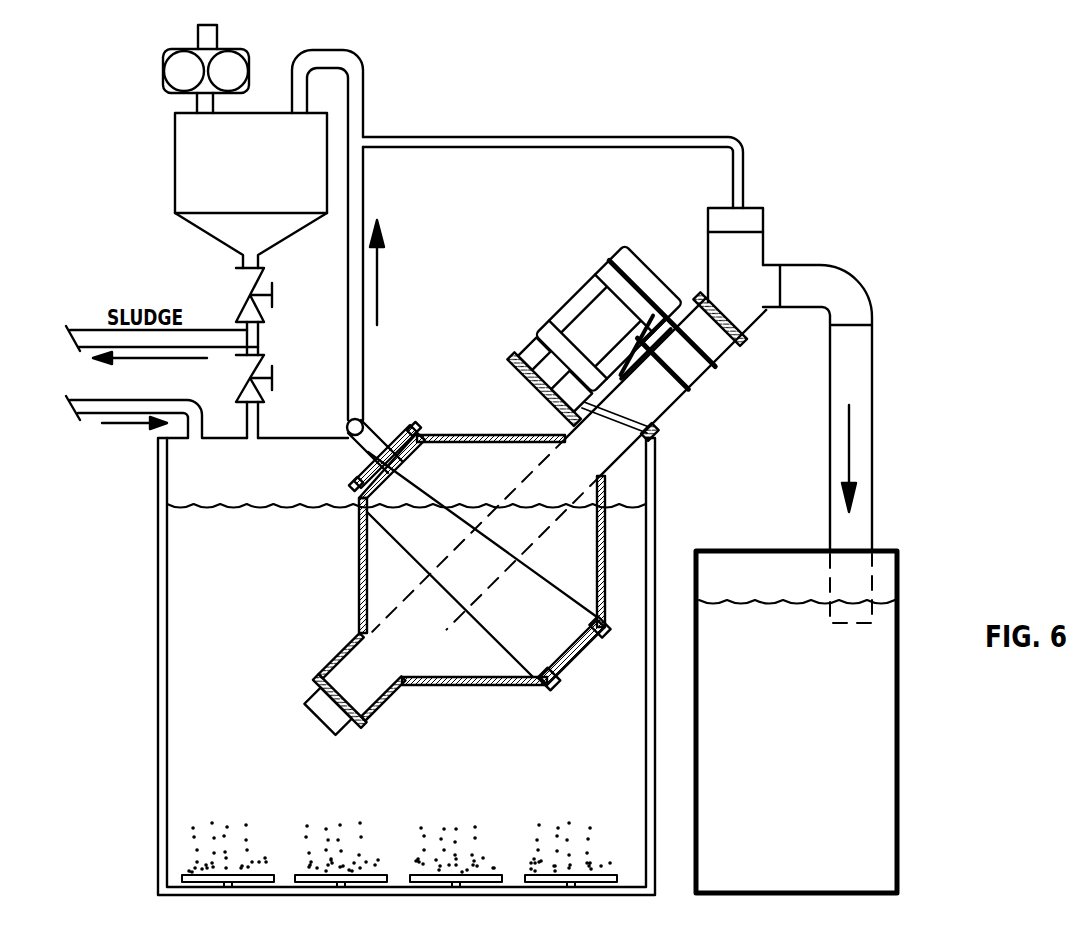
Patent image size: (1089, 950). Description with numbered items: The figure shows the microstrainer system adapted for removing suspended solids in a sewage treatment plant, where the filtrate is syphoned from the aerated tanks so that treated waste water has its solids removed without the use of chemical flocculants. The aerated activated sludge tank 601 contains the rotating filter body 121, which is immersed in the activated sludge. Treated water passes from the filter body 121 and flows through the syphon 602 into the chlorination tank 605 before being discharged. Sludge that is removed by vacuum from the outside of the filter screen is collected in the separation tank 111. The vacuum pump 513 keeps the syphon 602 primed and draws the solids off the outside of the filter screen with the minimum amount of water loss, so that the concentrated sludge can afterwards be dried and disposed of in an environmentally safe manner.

The separation tank 111 is at (327, 122).
The rotating filter body 121 is at (358, 562).
The vacuum pump 513 is at (162, 87).
The aerated activated sludge tank 601 is at (655, 532).
The syphon 602 is at (847, 278).
The chlorination tank 605 is at (897, 717).